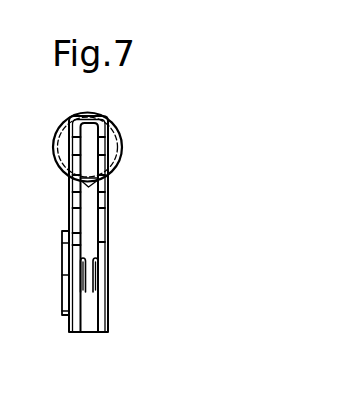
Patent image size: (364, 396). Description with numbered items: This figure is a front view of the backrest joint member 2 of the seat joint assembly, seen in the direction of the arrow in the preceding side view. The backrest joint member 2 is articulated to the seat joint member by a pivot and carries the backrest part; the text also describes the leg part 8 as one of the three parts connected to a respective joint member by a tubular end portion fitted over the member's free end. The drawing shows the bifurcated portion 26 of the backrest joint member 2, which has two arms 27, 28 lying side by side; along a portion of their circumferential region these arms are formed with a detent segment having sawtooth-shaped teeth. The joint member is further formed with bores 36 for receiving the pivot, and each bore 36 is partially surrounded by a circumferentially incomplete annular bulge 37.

The backrest joint member 2 is at (111, 243).
The leg part 8 is at (120, 137).
The bifurcated portion 26 is at (61, 278).
The arm 27 is at (108, 192).
The arm 28 is at (73, 190).
The bore 36 is at (80, 280).
The annular bulge 37 is at (66, 312).